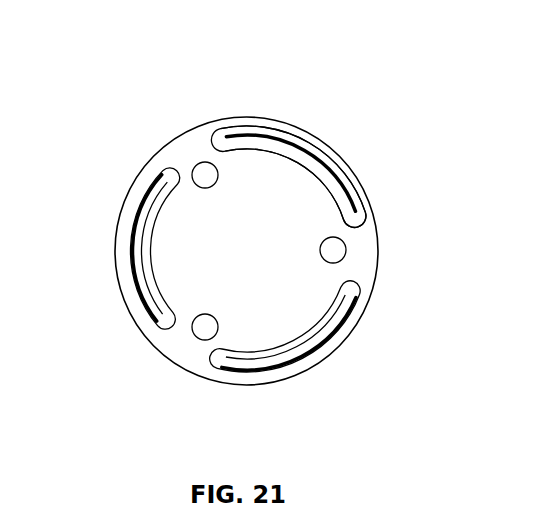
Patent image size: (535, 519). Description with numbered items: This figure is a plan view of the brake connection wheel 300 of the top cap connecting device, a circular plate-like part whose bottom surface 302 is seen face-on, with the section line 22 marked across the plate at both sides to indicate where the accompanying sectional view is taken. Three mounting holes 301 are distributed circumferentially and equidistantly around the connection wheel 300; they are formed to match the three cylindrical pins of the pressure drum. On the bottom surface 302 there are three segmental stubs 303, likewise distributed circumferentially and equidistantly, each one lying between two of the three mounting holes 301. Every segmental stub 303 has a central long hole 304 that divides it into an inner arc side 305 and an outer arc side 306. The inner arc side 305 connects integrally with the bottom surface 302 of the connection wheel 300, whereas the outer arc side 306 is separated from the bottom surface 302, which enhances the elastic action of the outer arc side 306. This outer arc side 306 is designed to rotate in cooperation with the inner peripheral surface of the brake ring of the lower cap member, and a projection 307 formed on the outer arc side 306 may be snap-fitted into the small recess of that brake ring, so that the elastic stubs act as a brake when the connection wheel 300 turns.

The brake connection wheel 300 is at (381, 89).
The mounting holes 301 is at (335, 250).
The bottom surface 302 is at (278, 275).
The segmental stub 303 is at (289, 133).
The central long hole 304 is at (282, 135).
The inner arc side 305 is at (308, 168).
The outer arc side 306 is at (337, 172).
The projection 307 is at (307, 147).
The section line 22- 22 is at (82, 287).